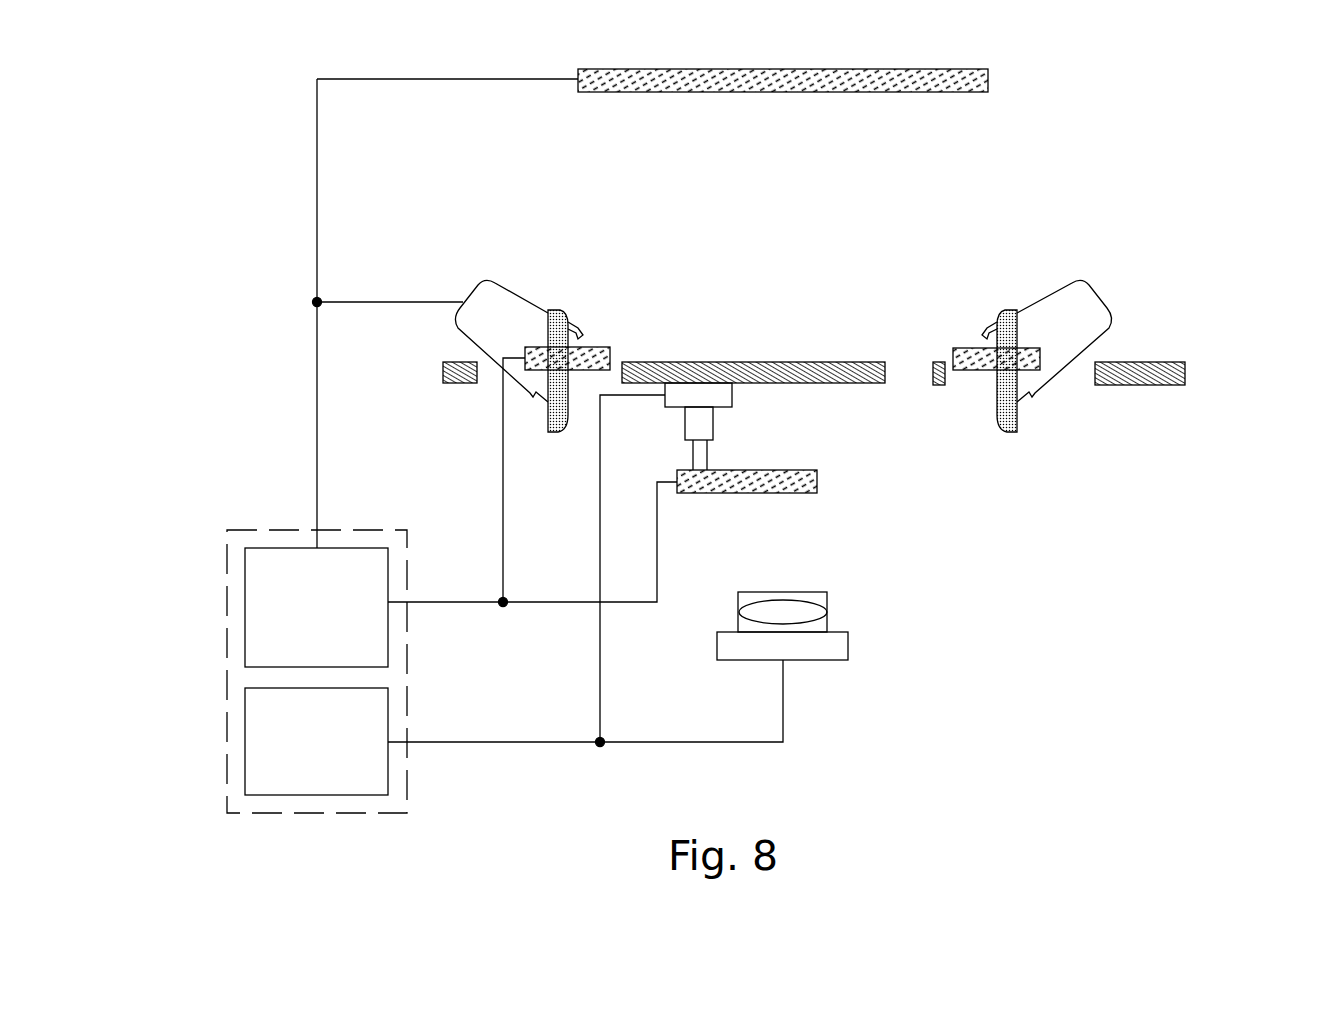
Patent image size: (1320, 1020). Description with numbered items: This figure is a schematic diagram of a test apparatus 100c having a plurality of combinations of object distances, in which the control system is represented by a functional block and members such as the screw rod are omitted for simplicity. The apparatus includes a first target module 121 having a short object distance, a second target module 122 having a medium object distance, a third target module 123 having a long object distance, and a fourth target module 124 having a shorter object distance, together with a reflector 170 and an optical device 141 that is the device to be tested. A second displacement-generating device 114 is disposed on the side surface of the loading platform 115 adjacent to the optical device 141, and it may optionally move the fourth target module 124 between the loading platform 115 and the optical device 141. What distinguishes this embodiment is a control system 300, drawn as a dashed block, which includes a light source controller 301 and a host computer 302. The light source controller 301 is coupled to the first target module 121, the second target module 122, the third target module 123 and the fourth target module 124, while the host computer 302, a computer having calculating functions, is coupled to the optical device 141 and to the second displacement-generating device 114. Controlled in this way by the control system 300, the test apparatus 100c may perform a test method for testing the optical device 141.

The test apparatus having a plurality of combinations of object distances 100c is at (1222, 167).
The second displacement-generating device 114 is at (697, 418).
The loading platform 115 is at (1185, 370).
The first target module 121 is at (612, 345).
The second target module 122 is at (975, 72).
The third target module 123 is at (493, 292).
The fourth target module 124 is at (800, 482).
The optical device 141 is at (815, 648).
The reflector 170 is at (550, 417).
The control system 300 is at (227, 682).
The light source controller 301 is at (245, 600).
The host computer 302 is at (245, 740).